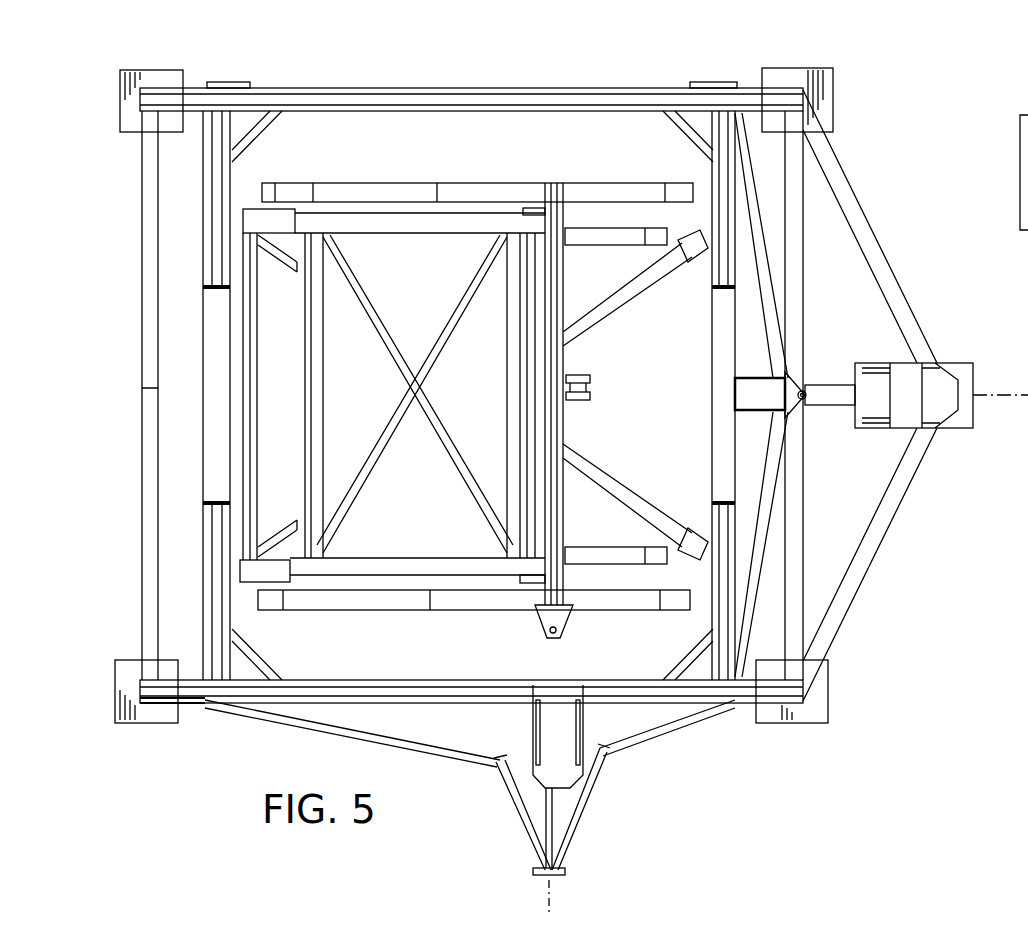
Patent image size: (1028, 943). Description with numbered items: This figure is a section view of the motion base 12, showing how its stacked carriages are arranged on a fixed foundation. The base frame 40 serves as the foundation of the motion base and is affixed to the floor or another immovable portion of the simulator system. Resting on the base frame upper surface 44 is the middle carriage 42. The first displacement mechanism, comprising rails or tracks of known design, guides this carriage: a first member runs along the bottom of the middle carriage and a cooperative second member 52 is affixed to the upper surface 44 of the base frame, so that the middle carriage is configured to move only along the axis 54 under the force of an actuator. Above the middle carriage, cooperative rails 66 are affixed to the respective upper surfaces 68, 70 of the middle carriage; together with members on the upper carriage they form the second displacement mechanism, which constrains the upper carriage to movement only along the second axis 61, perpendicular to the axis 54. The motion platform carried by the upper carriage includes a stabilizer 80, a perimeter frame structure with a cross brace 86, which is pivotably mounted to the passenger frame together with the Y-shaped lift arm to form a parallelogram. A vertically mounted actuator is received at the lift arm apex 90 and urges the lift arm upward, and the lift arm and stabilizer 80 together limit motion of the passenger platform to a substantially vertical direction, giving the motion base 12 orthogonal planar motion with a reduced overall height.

The motion base 12 is at (670, 764).
The base frame 40 is at (142, 605).
The middle carriage 42 is at (458, 680).
The base frame upper surface 44 is at (190, 700).
The second member 52 is at (200, 104).
The axis 54 is at (995, 400).
The second axis 61 is at (550, 880).
The cooperative rails 66 is at (722, 160).
The upper surface of the middle carriage 68 is at (212, 378).
The upper surface of the middle carriage 70 is at (720, 378).
The stabilizer 80 is at (433, 557).
The cross brace 86 is at (432, 392).
The lift arm apex 90 is at (575, 378).